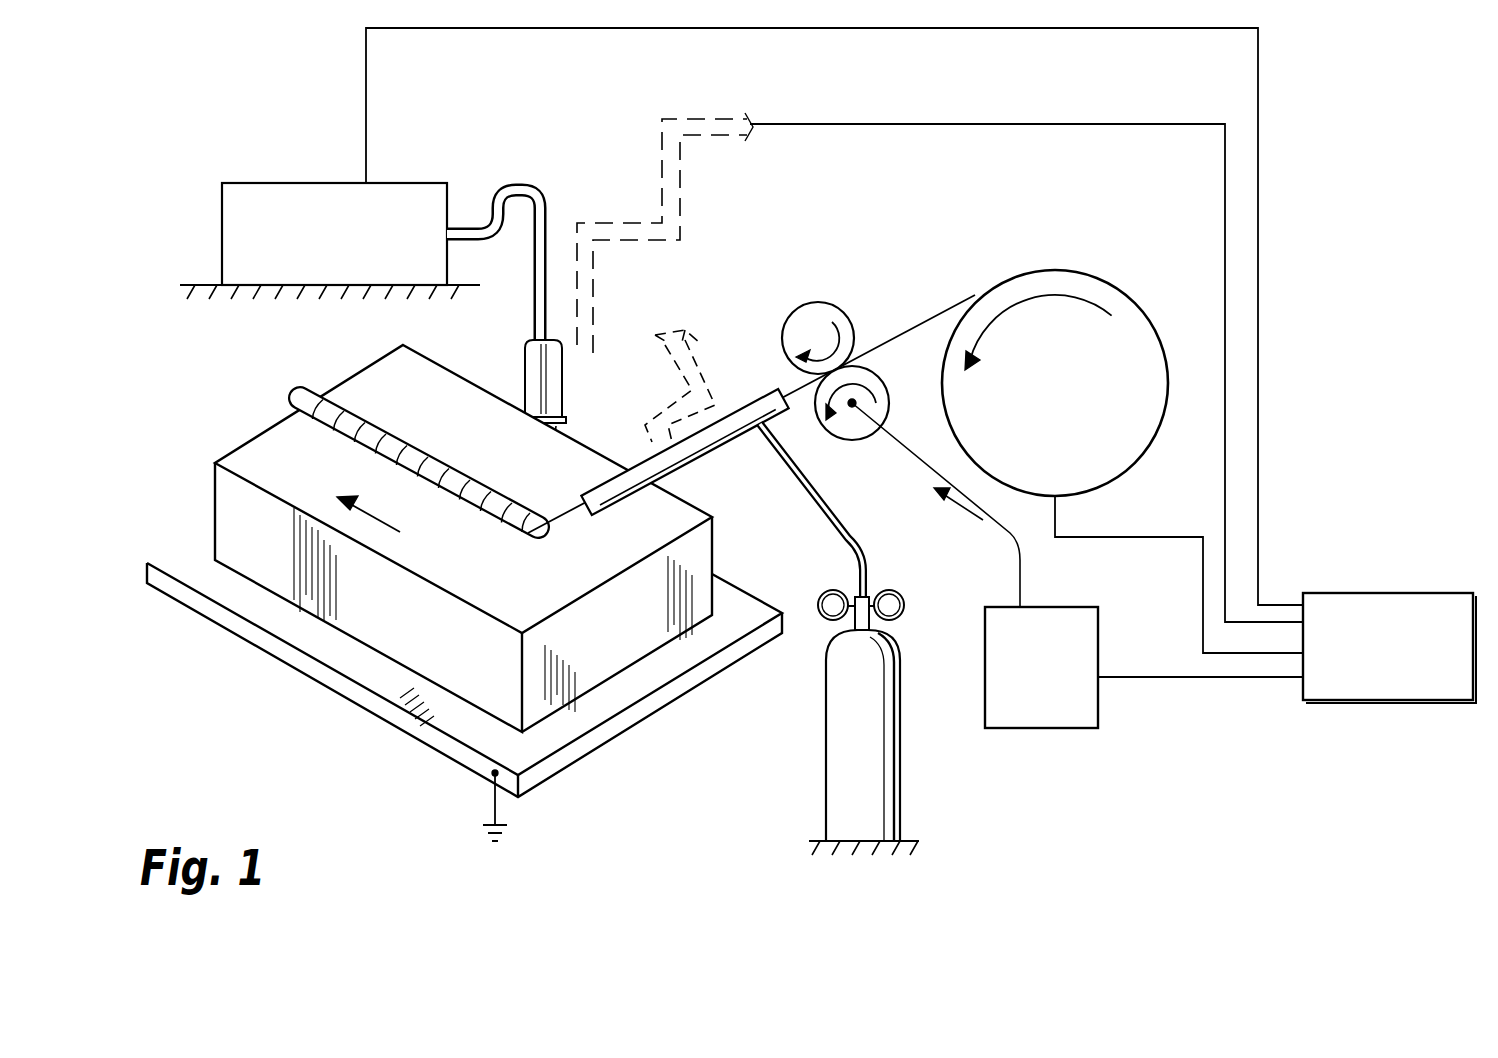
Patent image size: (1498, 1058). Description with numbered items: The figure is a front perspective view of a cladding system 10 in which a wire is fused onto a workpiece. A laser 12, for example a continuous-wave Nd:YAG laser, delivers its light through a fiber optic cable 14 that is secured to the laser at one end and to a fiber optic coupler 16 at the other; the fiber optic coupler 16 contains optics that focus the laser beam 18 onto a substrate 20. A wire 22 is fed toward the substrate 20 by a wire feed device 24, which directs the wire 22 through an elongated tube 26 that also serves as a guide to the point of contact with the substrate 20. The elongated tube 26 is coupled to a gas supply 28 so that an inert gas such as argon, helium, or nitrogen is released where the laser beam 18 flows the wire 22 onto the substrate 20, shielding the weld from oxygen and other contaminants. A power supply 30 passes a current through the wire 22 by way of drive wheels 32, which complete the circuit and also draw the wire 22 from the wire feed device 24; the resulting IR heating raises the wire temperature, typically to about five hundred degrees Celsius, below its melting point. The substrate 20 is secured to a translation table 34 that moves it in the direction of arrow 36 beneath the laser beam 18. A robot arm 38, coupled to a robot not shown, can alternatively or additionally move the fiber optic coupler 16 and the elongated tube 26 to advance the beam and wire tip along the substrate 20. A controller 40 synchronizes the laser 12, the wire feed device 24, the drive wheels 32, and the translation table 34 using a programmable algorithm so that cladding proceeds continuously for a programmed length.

The cladding system 10 is at (733, 215).
The laser 12 is at (400, 193).
The fiber optic cable 14 is at (520, 188).
The fiber optic coupler 16 is at (525, 352).
The laser beam 18 is at (553, 445).
The substrate 20 is at (494, 571).
The wire 22 is at (560, 528).
The wire feed device 24 is at (1080, 268).
The elongated tube 26 is at (722, 447).
The gas supply 28 is at (842, 750).
The power supply 30 is at (1063, 607).
The drive wheels 32 is at (822, 303).
The translation table 34 is at (376, 666).
The arrow 36 is at (205, 690).
The robot arm 38 is at (690, 115).
The controller 40 is at (1303, 690).